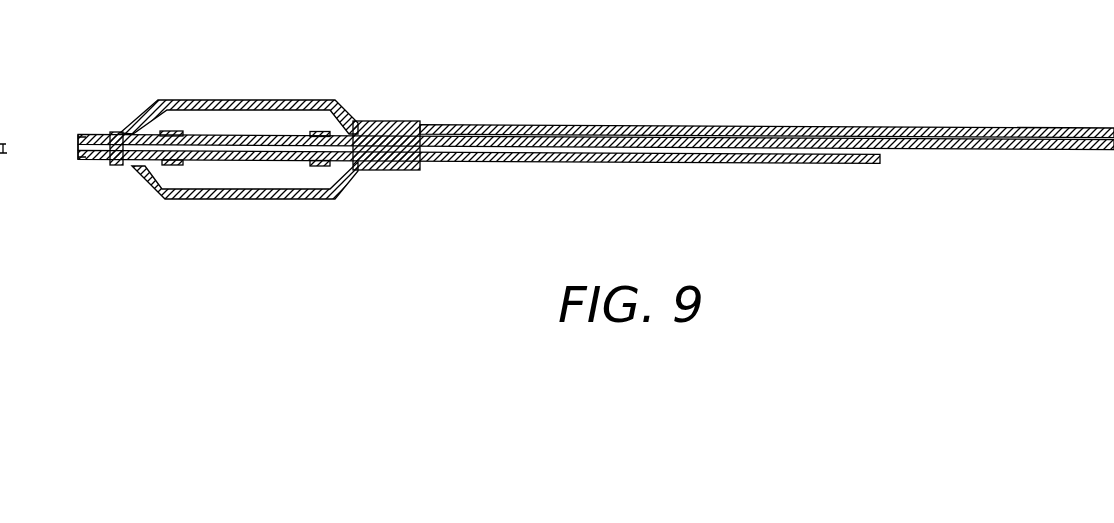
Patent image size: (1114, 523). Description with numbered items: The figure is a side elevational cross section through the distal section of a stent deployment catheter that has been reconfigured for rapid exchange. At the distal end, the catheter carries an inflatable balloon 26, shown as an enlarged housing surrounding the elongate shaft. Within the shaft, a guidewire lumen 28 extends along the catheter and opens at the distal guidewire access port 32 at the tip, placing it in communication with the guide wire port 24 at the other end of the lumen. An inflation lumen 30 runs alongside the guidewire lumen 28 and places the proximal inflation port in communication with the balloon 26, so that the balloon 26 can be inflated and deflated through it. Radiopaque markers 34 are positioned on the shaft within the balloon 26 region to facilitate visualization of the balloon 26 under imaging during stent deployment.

The guide wire port 24 is at (880, 160).
The inflatable balloon 26 is at (223, 100).
The guidewire lumen 28 is at (504, 150).
The inflation lumen 30 is at (708, 130).
The distal guidewire access port 32 is at (76, 148).
The radiopaque markers 34 is at (317, 133).